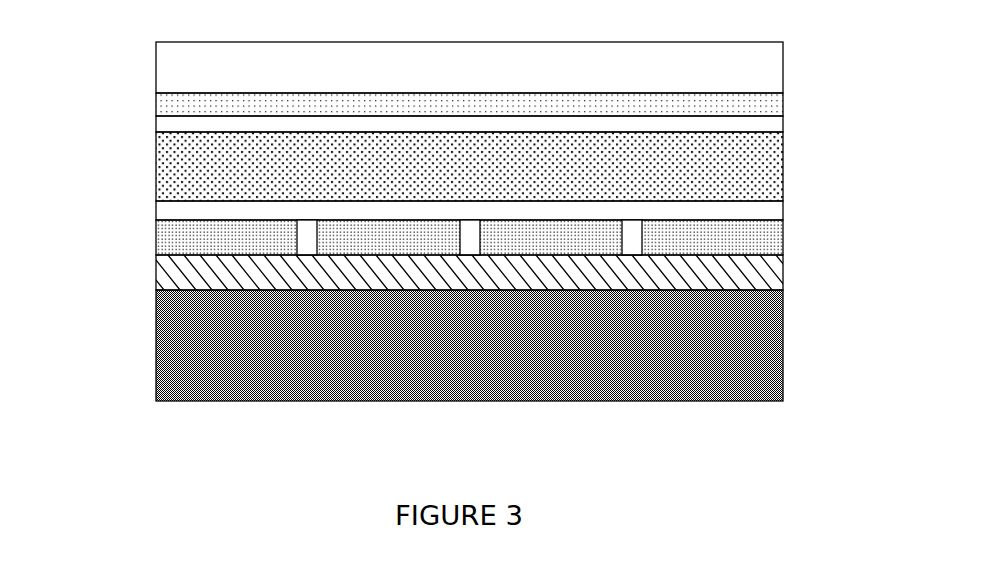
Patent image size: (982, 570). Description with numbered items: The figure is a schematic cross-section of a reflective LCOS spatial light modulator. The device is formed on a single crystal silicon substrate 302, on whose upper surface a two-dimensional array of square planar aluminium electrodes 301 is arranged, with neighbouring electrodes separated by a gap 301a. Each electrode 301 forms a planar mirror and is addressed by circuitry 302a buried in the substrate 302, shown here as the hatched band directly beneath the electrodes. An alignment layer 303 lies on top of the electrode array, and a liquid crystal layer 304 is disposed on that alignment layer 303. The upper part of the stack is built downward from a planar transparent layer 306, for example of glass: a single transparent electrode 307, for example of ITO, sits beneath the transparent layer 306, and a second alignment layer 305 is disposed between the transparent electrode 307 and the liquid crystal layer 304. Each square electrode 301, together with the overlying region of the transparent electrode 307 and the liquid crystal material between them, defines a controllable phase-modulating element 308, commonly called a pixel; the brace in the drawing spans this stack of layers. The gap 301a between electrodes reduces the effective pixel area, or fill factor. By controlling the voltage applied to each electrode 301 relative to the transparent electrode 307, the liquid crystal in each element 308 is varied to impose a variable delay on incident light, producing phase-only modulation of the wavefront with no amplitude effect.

The square planar aluminium electrodes 301 is at (757, 236).
The gap 301a is at (628, 237).
The single crystal silicon substrate 302 is at (156, 364).
The circuitry 302a is at (155, 278).
The alignment layer 303 is at (765, 210).
The liquid crystal layer 304 is at (760, 168).
The second alignment layer 305 is at (765, 124).
The planar transparent layer 306 is at (757, 67).
The transparent electrode 307 is at (765, 106).
The phase-modulating element 308 is at (446, 168).